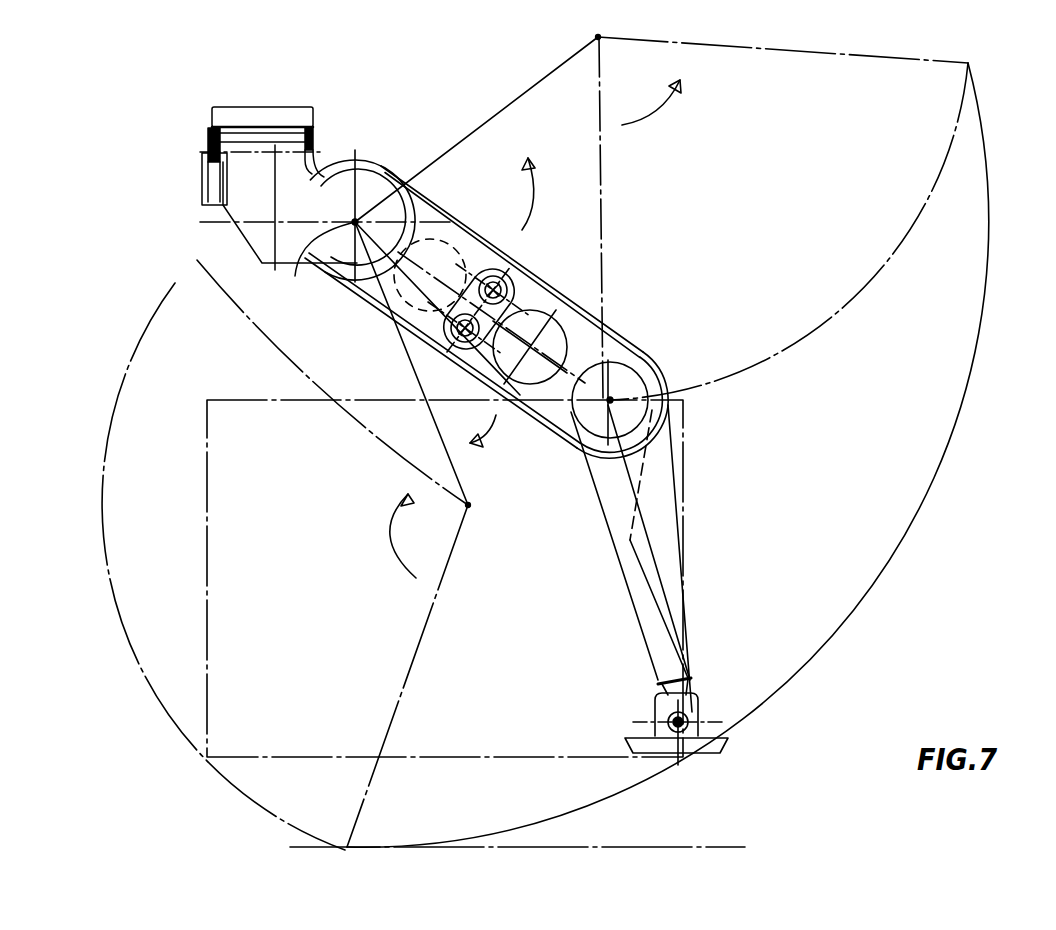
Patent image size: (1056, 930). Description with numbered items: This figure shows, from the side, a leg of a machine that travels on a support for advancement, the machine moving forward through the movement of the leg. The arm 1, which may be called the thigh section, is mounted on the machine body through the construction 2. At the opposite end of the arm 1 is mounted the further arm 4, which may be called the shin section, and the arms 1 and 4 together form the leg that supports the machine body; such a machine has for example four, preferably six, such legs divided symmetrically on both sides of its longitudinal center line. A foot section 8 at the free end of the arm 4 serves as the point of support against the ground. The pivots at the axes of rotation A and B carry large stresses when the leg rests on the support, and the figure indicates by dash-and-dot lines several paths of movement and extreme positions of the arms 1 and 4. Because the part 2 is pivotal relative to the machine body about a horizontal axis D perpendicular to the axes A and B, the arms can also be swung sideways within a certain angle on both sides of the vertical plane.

The arm 1 is at (470, 122).
The construction 2 is at (240, 218).
The arm 4 is at (745, 46).
The foot section 8 is at (700, 762).
The axis of rotation A is at (313, 264).
The axis of rotation B is at (592, 38).
The horizontal axis D is at (333, 150).